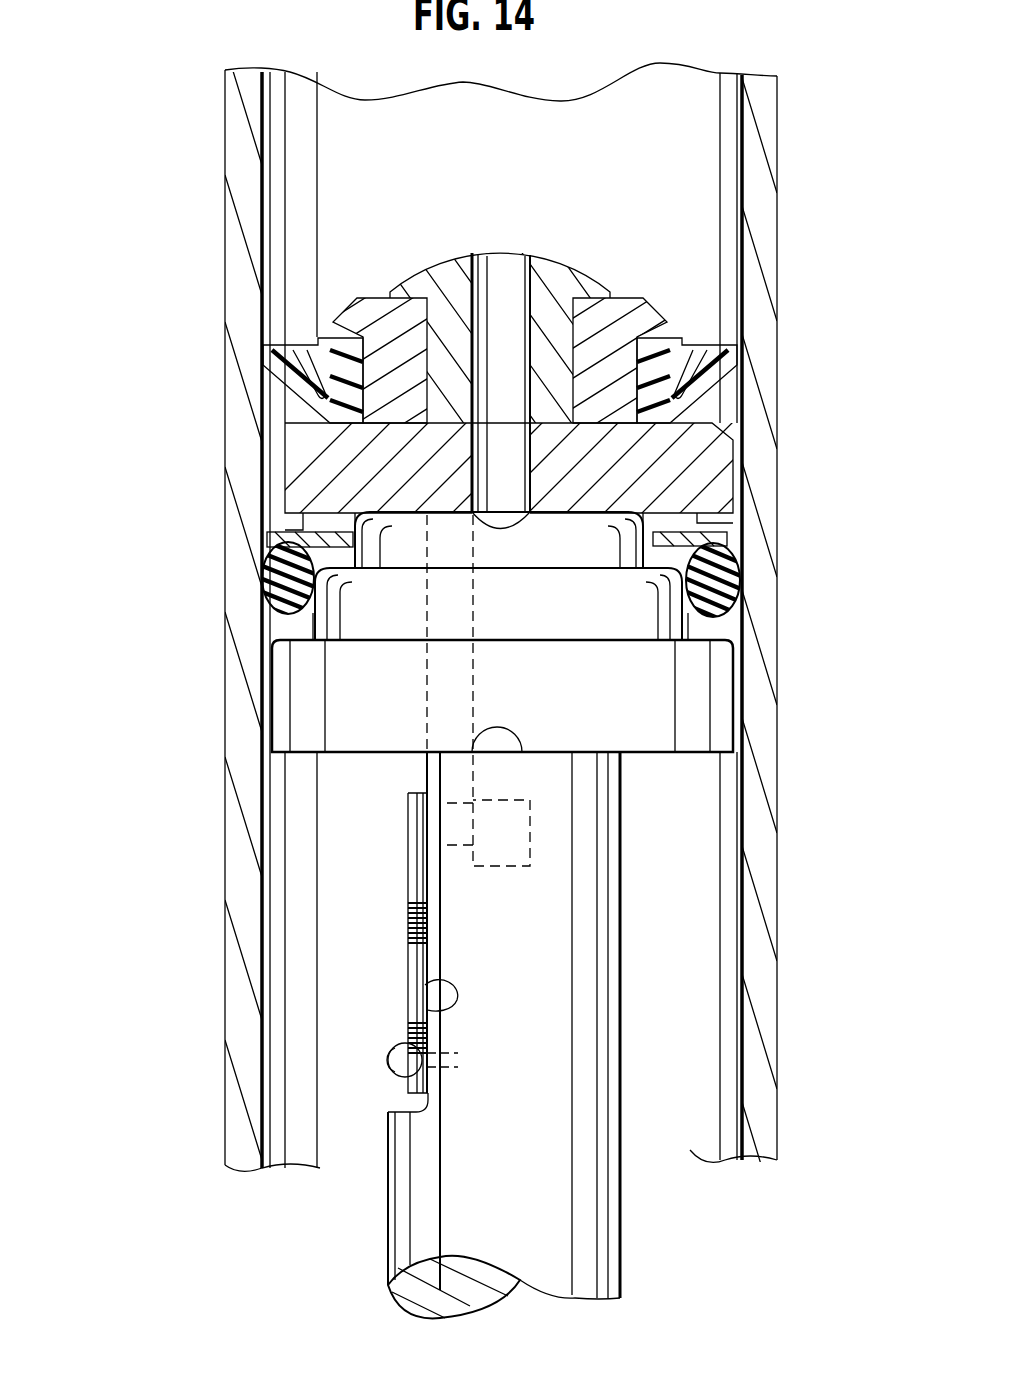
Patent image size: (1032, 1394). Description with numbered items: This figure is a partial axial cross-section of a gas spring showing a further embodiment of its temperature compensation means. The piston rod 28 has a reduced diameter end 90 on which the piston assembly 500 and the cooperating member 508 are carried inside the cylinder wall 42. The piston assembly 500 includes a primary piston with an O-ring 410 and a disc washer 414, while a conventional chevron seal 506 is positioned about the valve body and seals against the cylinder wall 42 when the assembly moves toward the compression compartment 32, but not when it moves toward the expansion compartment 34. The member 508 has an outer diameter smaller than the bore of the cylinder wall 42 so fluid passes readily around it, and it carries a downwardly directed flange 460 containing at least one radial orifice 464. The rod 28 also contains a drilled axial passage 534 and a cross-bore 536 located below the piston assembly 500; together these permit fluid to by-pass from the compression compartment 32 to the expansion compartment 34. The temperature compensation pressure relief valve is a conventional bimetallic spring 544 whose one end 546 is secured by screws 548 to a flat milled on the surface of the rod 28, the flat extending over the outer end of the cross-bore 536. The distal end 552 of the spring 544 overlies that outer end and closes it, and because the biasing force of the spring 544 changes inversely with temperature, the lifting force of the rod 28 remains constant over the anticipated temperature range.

The compression compartment 32 is at (421, 150).
The expansion compartment 34 is at (690, 1085).
The cylinder wall 42 is at (765, 1002).
The reduced diameter end 90 is at (556, 290).
The chevron seal 506 is at (300, 395).
The member 508 is at (703, 450).
The downwardly directed flange 460 is at (622, 527).
The radial orifice 464 is at (330, 535).
The disc washer 414 is at (690, 540).
The O-ring 410 is at (740, 580).
The piston assembly 500 is at (300, 710).
The drilled axial passage 534 is at (496, 246).
The cross-bore 536 is at (448, 820).
The distal end 552 is at (410, 852).
The bimetallic spring 544 is at (388, 916).
The end of the spring 546 is at (425, 985).
The screws 548 is at (400, 1070).
The piston rod 28 is at (590, 1238).